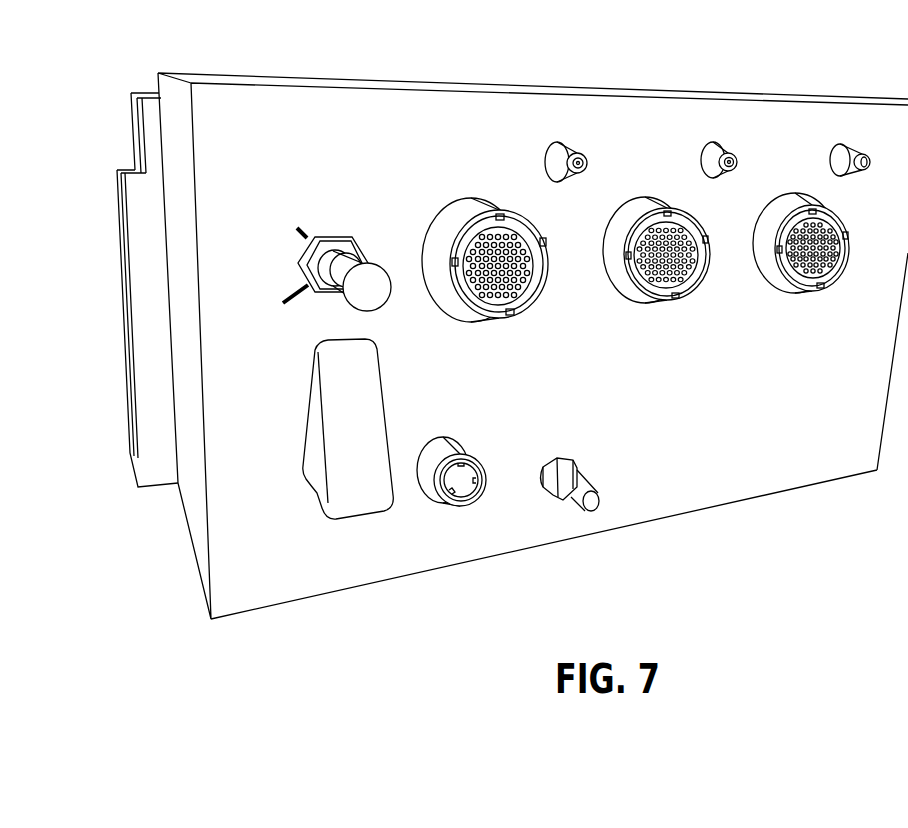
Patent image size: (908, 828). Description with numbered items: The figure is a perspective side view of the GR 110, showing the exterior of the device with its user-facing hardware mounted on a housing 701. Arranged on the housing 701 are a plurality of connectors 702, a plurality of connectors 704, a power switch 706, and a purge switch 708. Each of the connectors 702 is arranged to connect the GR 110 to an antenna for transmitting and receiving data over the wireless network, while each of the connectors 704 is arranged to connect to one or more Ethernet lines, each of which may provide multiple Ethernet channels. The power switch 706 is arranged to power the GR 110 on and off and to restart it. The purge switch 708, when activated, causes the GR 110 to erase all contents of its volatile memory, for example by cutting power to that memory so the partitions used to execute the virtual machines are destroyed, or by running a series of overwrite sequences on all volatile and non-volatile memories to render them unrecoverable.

The GR 110 is at (892, 82).
The housing 701 is at (452, 113).
The connectors 702 is at (548, 153).
The connectors 704 is at (481, 320).
The power switch 706 is at (353, 308).
The purge switch 708 is at (328, 518).